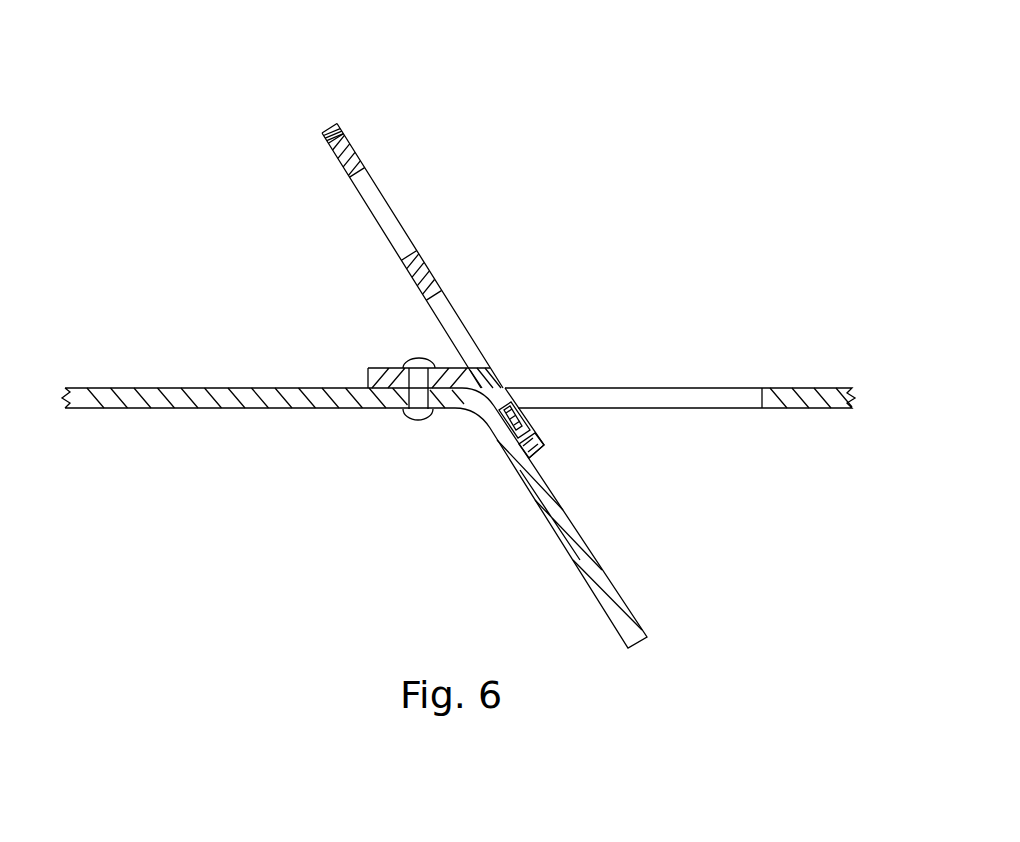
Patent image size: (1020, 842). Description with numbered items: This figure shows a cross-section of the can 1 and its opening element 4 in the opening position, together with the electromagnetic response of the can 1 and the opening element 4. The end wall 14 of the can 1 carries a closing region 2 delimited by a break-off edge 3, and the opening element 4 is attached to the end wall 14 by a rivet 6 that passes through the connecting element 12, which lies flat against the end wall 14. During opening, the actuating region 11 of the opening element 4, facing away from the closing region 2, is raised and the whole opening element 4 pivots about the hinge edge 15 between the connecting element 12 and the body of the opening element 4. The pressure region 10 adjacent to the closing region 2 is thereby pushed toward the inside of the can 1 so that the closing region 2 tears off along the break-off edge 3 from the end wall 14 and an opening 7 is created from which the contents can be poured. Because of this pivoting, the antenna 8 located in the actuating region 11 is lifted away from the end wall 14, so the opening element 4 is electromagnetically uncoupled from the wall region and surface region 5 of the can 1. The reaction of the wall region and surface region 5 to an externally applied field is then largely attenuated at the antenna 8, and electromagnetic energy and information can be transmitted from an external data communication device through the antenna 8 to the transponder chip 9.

The can 1 is at (667, 263).
The closing region 2 is at (606, 600).
The break-off edge 3 is at (762, 393).
The opening element 4 is at (488, 265).
The wall region and surface region 5 is at (273, 398).
The rivet 6 is at (418, 390).
The opening 7 is at (722, 398).
The antenna 8 is at (348, 138).
The transponder chip 9 is at (514, 392).
The pressure region 10 is at (543, 430).
The actuating region 11 is at (326, 128).
The connecting element 12 is at (374, 367).
The end wall 14 is at (153, 398).
The hinge edge 15 is at (489, 372).